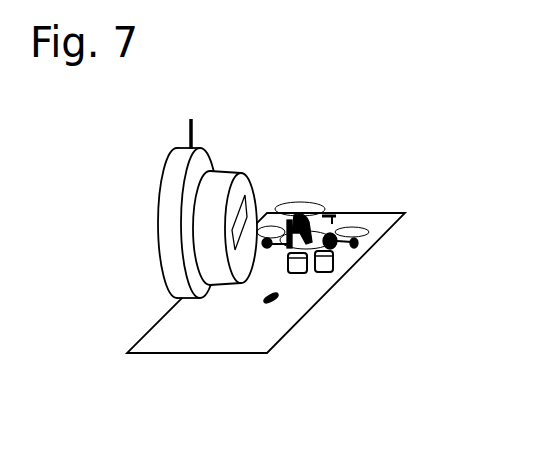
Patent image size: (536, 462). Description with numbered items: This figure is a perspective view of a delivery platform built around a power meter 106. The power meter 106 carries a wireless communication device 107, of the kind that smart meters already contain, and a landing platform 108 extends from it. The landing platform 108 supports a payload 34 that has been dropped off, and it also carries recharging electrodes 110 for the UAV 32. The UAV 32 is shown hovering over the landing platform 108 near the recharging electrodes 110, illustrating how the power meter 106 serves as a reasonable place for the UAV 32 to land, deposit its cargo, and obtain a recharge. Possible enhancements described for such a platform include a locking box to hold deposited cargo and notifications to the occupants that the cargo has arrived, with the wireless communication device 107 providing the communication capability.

The power meter 106 is at (172, 212).
The wireless communication device 107 is at (150, 119).
The landing platform 108 is at (236, 283).
The UAV 32 is at (330, 240).
The recharging electrodes 110 is at (346, 282).
The payload 34 is at (321, 327).